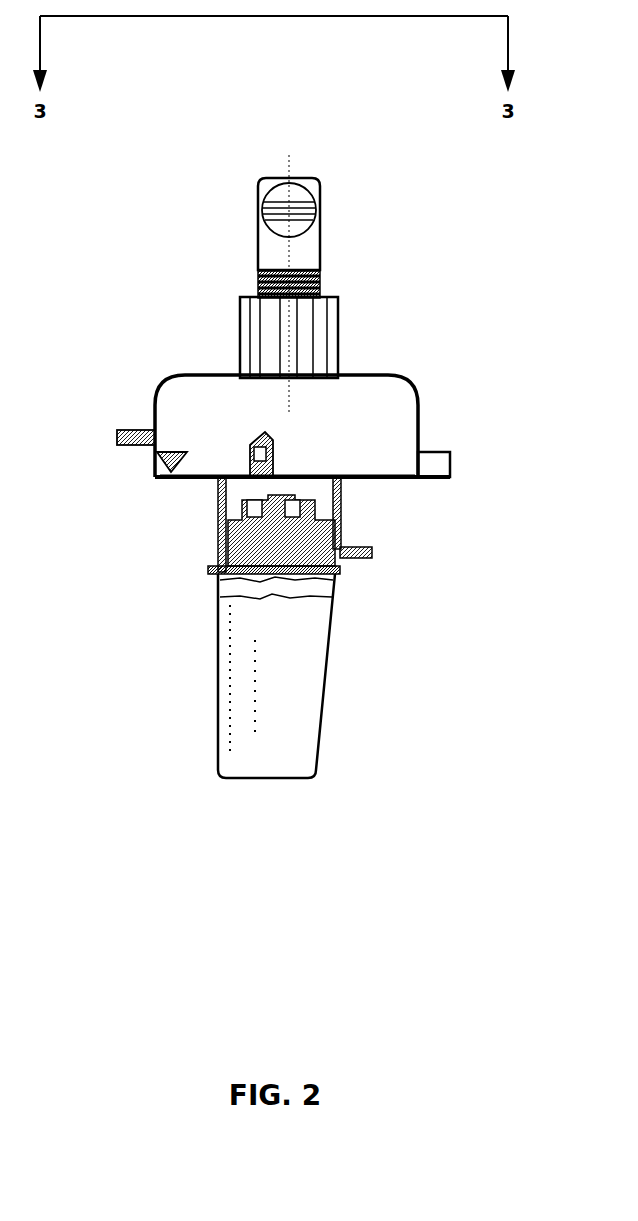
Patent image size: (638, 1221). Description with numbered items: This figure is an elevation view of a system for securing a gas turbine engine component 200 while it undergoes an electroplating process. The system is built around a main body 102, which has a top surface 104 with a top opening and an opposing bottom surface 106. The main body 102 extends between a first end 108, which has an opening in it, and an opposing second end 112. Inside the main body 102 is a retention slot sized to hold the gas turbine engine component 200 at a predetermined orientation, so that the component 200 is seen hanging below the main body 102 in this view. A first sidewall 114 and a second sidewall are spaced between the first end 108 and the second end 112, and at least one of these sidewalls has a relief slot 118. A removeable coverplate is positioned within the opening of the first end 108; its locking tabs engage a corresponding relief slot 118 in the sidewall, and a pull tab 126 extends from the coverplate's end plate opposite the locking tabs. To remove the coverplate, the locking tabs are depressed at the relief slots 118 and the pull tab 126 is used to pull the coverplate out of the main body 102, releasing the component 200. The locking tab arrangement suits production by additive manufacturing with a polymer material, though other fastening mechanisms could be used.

The main body 102 is at (164, 387).
The top surface 104 is at (233, 377).
The bottom surface 106 is at (210, 478).
The first end 108 is at (156, 473).
The second end 112 is at (418, 433).
The first sidewall 114 is at (366, 437).
The relief slot 118 is at (282, 455).
The pull tab 126 is at (117, 437).
The gas turbine engine component 200 is at (325, 667).